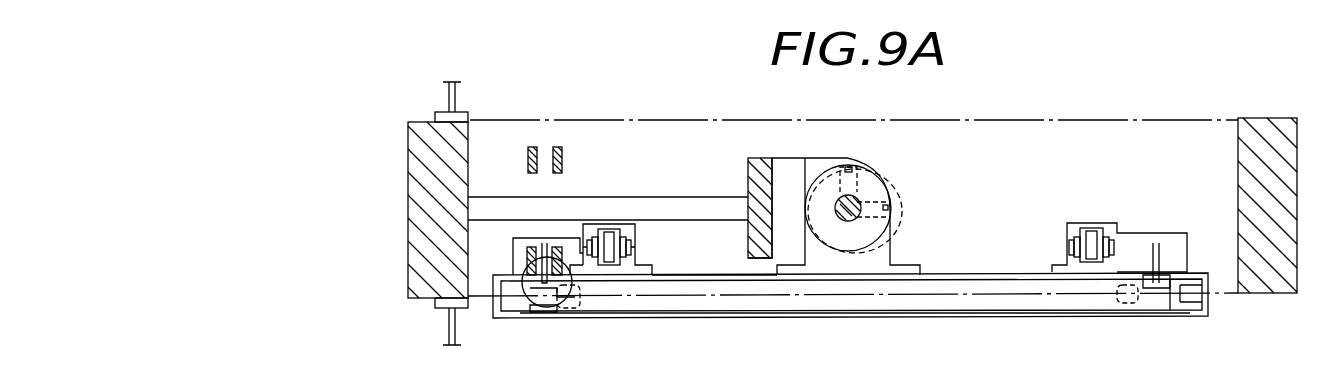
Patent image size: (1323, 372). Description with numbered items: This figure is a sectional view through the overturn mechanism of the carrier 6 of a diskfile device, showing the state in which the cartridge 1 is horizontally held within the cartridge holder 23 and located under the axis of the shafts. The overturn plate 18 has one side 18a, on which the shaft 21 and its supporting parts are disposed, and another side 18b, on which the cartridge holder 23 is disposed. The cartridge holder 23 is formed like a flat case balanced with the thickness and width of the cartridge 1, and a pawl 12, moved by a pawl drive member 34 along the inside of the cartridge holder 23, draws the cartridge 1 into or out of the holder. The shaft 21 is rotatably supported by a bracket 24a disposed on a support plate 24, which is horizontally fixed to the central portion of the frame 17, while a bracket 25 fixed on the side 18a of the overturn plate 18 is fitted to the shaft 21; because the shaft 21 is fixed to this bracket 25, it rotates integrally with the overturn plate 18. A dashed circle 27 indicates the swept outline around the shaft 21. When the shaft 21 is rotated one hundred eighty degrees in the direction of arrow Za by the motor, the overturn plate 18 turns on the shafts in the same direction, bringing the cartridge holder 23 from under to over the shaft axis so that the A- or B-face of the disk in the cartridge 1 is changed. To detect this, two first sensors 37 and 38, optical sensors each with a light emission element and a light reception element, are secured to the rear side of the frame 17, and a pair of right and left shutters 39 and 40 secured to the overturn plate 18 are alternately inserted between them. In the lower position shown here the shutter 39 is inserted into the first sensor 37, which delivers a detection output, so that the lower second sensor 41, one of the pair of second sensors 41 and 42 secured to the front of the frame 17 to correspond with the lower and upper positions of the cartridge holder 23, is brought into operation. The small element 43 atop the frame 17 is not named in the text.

The cartridge 1 is at (1286, 158).
The carrier 6 is at (608, 100).
The pawls 12 is at (575, 312).
The frame 17 is at (430, 131).
The overturn plate 18 is at (582, 259).
The one side of the overturn plate 18a is at (688, 253).
The other side of the overturn plate 18b is at (646, 322).
The shaft 21 is at (838, 199).
The cartridge holder 23 is at (703, 307).
The support plate 24 is at (628, 196).
The bracket 24a is at (784, 233).
The bracket 25 is at (806, 232).
The eccentric disc 27 is at (892, 183).
The pawl drive member 34 is at (517, 237).
The first sensor 37 is at (542, 302).
The first sensor 38 is at (558, 147).
The shutter 39 is at (555, 232).
The shutter 40 is at (1148, 243).
The lower second sensor 41 is at (440, 313).
The upper second sensor 42 is at (458, 115).
The upper screw 43 is at (457, 90).
The direction of arrow Za is at (786, 106).